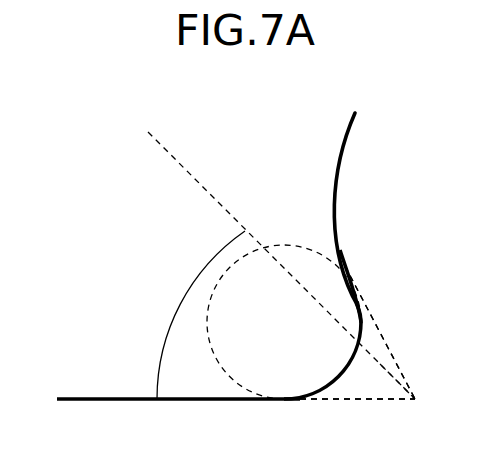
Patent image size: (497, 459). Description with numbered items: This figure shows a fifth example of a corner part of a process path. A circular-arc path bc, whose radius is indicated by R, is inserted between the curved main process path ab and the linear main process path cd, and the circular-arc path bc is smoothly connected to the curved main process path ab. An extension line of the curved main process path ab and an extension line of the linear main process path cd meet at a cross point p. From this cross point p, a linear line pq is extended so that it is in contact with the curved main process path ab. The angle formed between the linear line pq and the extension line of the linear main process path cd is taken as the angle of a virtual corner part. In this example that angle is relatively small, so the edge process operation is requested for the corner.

The start point of curved main process path a is at (359, 212).
The connection point of curved main process path and circular-arc path b is at (377, 324).
The connection point of circular-arc path and linear main process path c is at (341, 380).
The end point of linear main process path d is at (175, 419).
The cross point p is at (371, 342).
The end point of linear line q is at (268, 249).
The radius of circular-arc path R is at (345, 364).